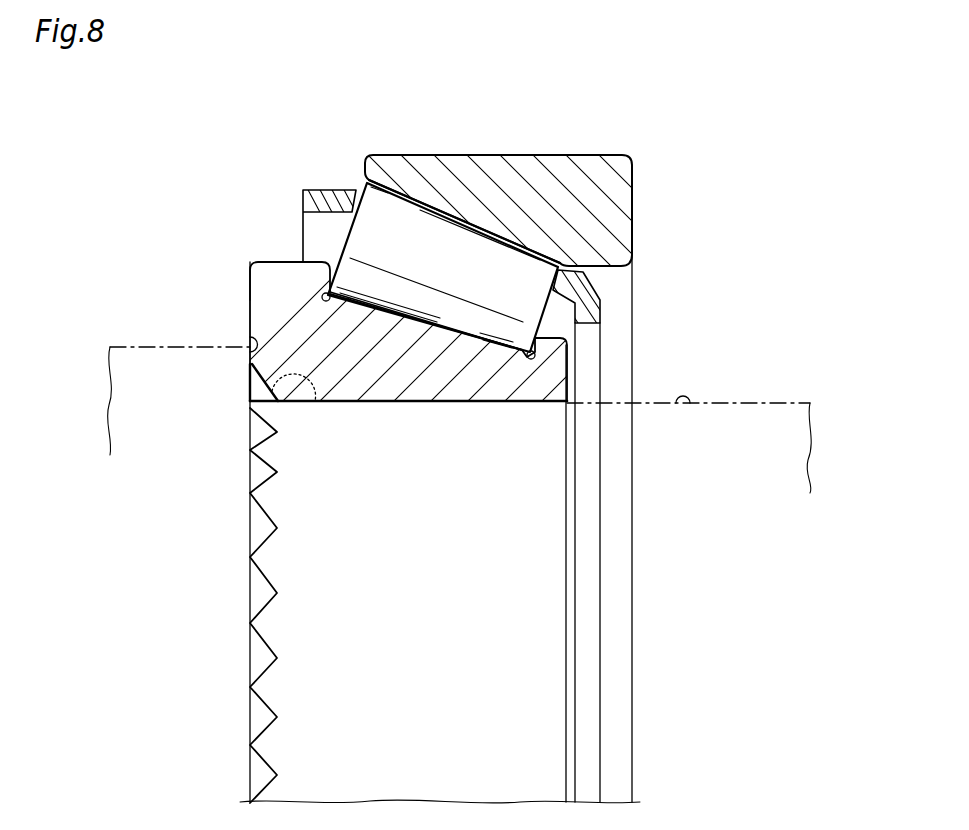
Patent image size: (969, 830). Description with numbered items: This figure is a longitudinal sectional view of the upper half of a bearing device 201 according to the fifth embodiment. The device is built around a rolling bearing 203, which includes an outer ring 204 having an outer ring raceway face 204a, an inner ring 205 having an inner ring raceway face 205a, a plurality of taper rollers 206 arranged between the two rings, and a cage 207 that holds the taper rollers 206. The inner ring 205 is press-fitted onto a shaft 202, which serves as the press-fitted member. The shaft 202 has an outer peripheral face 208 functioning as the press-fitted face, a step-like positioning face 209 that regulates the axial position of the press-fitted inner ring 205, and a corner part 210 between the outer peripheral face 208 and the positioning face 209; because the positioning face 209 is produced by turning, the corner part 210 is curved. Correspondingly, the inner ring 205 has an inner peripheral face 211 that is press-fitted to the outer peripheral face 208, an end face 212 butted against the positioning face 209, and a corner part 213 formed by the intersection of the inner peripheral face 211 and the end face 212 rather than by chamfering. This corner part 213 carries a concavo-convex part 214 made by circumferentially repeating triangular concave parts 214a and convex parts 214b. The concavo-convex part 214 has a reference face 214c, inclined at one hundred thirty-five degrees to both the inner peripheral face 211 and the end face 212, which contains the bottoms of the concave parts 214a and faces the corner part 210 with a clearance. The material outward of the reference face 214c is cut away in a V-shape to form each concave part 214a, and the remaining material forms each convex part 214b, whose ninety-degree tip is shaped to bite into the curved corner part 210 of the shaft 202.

The bearing device 201 is at (712, 275).
The shaft 202 is at (767, 403).
The rolling bearing 203 is at (543, 182).
The outer ring 204 is at (607, 210).
The outer ring raceway face 204a is at (397, 198).
The inner ring 205 is at (278, 287).
The inner ring raceway face 205a is at (471, 331).
The taper roller 206 is at (370, 208).
The cage 207 is at (320, 185).
The outer peripheral face 208 is at (683, 406).
The positioning face 209 is at (250, 333).
The corner part 210 is at (312, 402).
The inner peripheral face 211 is at (391, 402).
The end face 212 is at (247, 295).
The corner part 213 is at (248, 402).
The concavo-convex part 214 is at (253, 698).
The concave part 214a is at (263, 538).
The convex part 214b is at (250, 403).
The reference face 214c is at (247, 385).